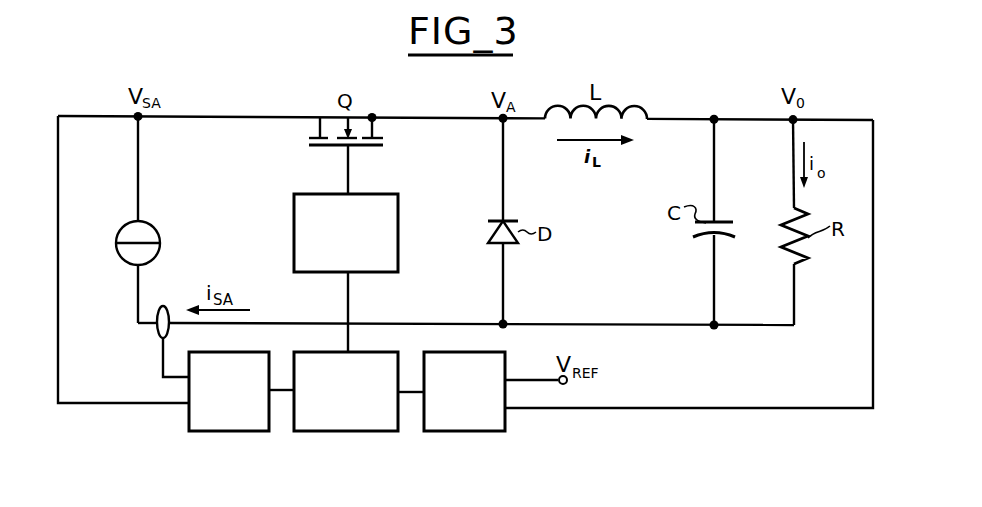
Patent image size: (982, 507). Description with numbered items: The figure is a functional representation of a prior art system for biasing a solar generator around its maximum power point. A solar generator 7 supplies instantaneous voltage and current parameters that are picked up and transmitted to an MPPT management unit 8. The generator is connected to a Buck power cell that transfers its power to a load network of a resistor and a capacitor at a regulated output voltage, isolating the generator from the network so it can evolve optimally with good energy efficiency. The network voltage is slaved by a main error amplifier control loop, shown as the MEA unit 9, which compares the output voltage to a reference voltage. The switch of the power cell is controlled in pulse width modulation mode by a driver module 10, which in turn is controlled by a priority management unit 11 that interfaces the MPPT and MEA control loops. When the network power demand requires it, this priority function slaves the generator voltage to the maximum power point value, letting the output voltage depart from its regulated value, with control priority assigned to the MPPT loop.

The solar generator 7 is at (122, 222).
The MPPT management unit 8 is at (219, 432).
The MEA (main error amplifier) module 9 is at (470, 433).
The driver module 10 is at (294, 217).
The priority management unit 11 is at (345, 432).